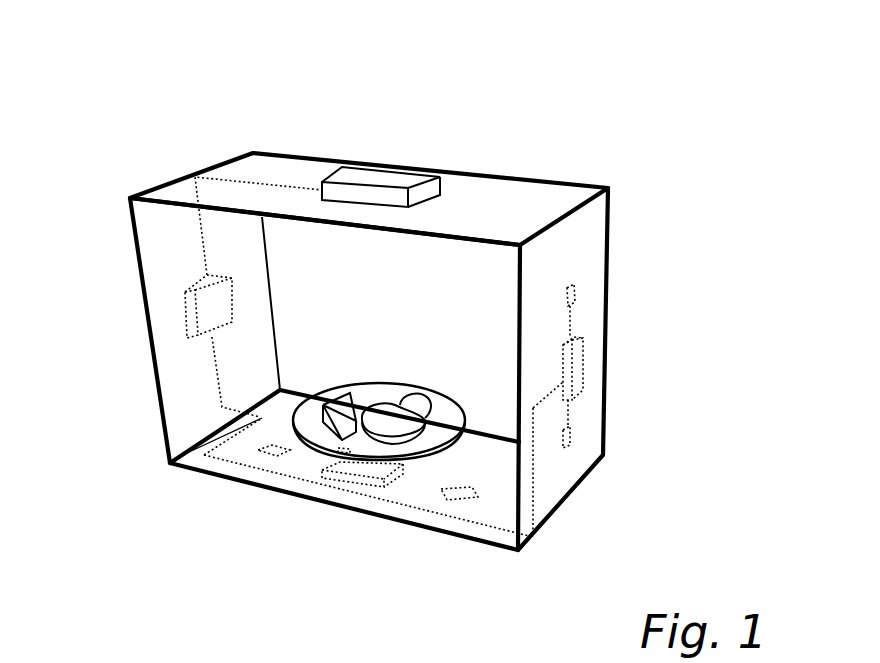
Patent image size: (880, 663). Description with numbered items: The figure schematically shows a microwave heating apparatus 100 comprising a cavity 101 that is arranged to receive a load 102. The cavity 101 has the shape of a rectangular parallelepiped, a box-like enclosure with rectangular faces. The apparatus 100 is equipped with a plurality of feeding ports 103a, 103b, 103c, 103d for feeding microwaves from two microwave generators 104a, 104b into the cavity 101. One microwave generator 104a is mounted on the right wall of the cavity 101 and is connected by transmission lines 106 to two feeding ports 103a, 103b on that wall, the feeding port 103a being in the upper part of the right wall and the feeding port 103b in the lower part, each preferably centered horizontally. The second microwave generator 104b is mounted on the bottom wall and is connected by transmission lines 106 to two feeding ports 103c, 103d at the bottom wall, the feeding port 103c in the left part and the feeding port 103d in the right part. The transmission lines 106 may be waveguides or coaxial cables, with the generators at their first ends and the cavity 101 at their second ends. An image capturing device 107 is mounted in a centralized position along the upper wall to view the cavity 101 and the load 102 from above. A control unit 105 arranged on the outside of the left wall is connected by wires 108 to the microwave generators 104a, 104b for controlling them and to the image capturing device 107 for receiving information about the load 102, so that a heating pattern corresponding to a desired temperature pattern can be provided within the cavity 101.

The microwave heating apparatus 100 is at (571, 117).
The cavity 101 is at (364, 341).
The load 102 is at (425, 380).
The feeding port 103a is at (572, 295).
The feeding port 103b is at (572, 440).
The feeding port 103c is at (270, 452).
The feeding port 103d is at (453, 494).
The microwave generator 104a is at (578, 365).
The microwave generator 104b is at (349, 477).
The control unit 105 is at (185, 308).
The transmission lines 106 is at (574, 320).
The image capturing device 107 is at (377, 178).
The wires 108 is at (202, 248).